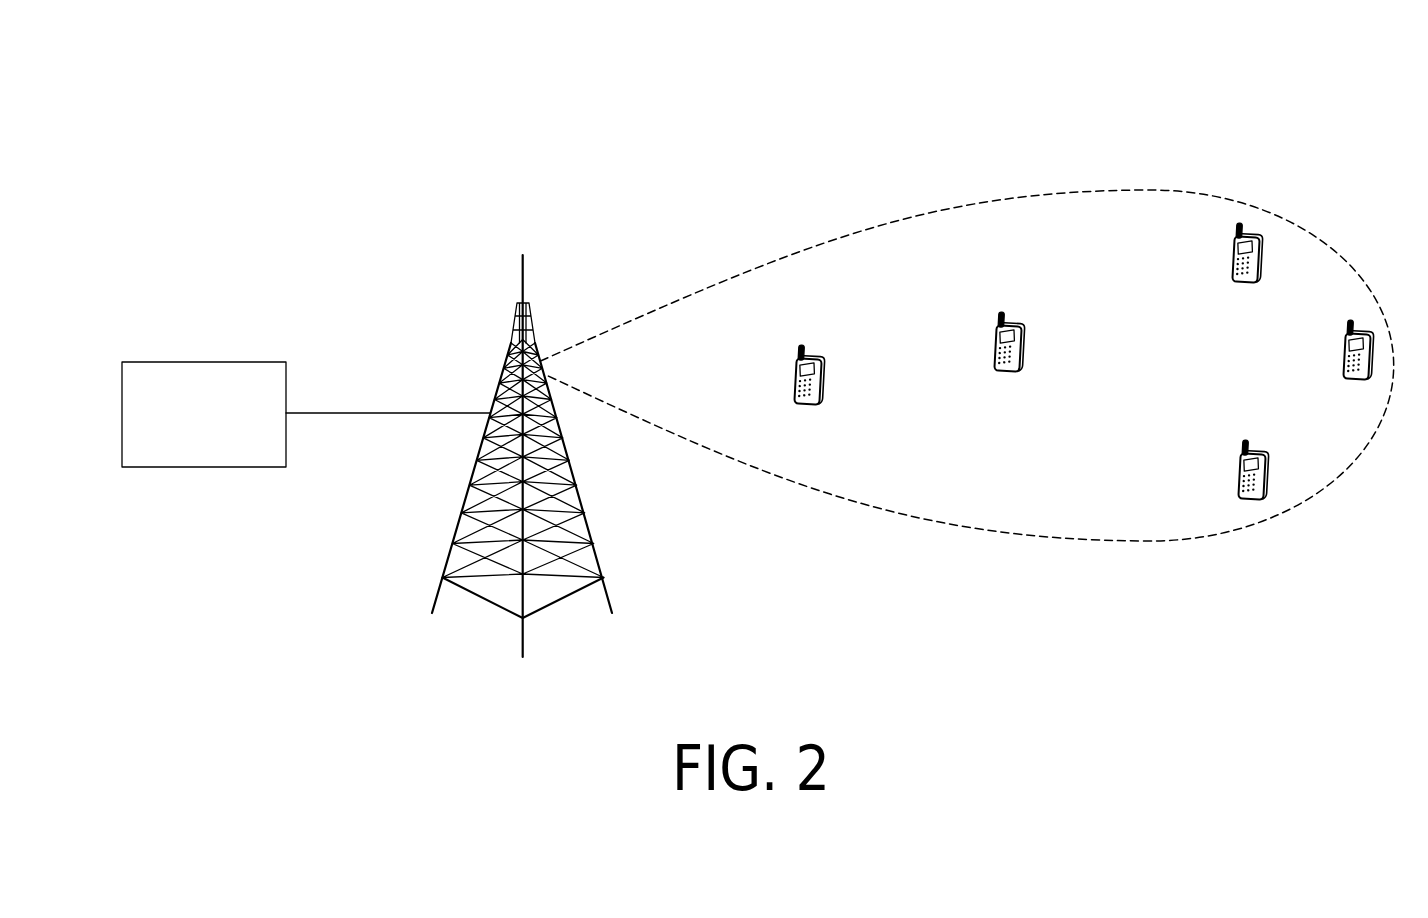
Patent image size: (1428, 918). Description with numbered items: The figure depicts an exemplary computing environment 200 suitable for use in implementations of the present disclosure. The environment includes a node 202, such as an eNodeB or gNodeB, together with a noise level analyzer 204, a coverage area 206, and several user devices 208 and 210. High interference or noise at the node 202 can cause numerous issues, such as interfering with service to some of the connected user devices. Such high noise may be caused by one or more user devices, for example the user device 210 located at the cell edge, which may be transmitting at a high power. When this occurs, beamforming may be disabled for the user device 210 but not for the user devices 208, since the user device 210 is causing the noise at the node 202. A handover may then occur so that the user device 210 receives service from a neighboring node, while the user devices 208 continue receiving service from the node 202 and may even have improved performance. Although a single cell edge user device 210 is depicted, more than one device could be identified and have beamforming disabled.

The computing environment 200 is at (163, 130).
The node 202 is at (505, 366).
The noise level analyzer 204 is at (192, 362).
The coverage area 206 is at (900, 220).
The user devices 208 is at (826, 378).
The user device 210 is at (1344, 346).